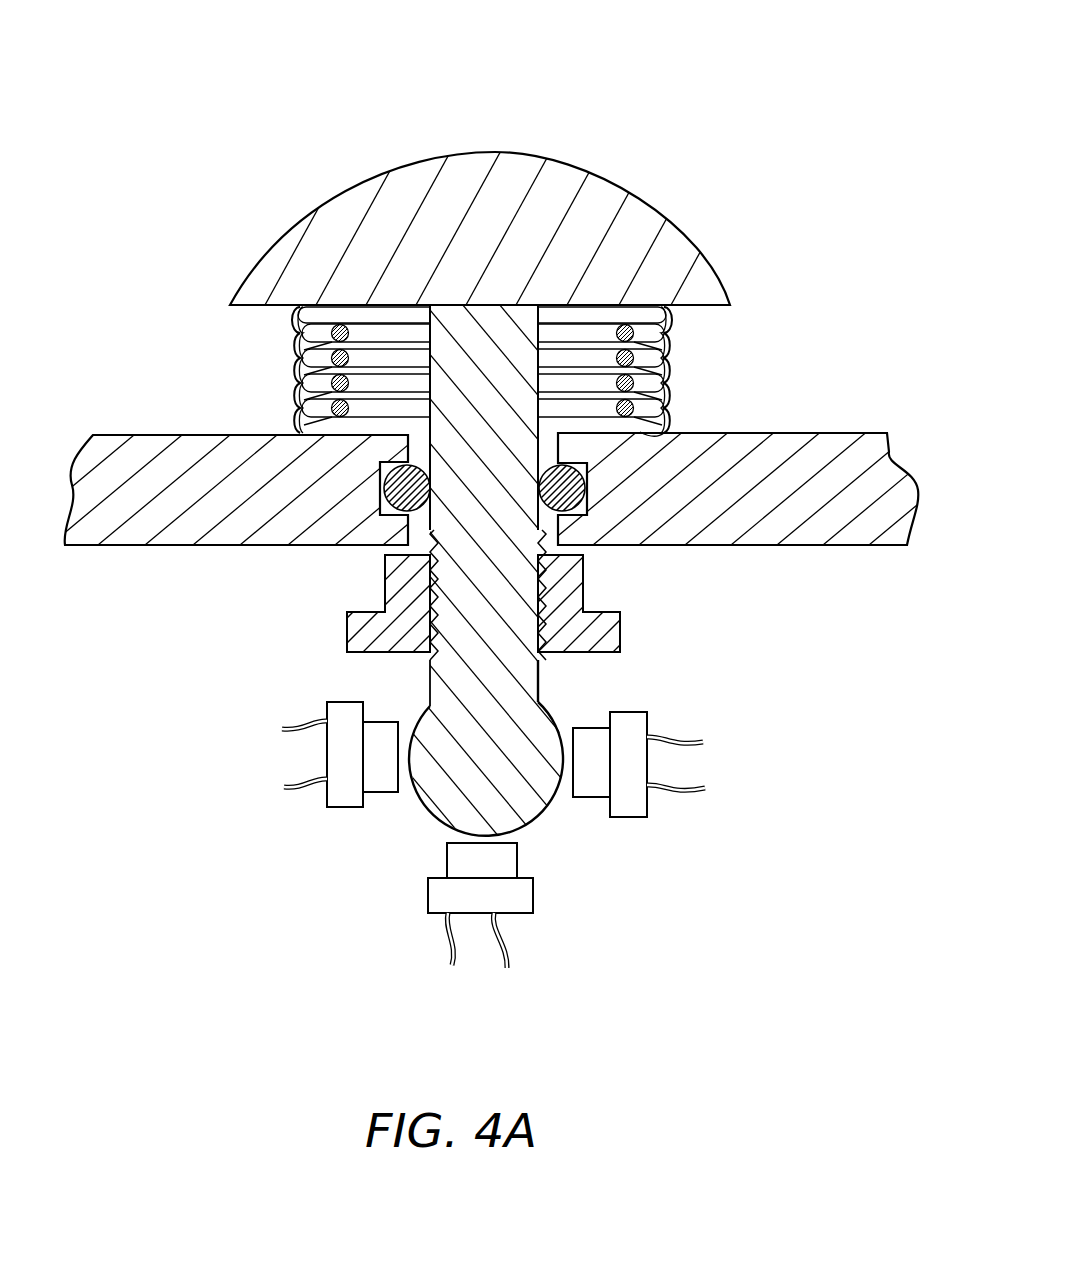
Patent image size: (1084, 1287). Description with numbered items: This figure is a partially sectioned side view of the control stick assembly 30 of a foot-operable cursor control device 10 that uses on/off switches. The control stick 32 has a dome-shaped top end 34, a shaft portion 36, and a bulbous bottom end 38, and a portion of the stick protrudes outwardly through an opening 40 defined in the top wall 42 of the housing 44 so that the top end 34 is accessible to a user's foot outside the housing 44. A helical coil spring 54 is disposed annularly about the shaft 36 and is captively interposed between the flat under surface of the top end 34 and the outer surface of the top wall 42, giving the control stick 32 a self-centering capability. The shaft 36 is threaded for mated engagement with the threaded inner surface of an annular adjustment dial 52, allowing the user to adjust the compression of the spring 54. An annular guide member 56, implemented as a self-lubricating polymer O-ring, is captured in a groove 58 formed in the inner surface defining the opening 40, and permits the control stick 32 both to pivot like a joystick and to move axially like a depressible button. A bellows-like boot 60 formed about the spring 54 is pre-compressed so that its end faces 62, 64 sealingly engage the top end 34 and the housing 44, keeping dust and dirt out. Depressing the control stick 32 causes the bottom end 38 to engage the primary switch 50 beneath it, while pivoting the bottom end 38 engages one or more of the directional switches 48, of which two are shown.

The foot-operable cursor control device 10 is at (756, 68).
The control stick assembly 30 is at (801, 208).
The control stick 32 is at (469, 131).
The top end 34 is at (607, 183).
The shaft portion 36 is at (548, 453).
The bottom end 38 is at (548, 707).
The opening 40 is at (410, 440).
The top wall 42 is at (770, 433).
The housing 44 is at (143, 435).
The directional switches 48 is at (342, 808).
The primary switch 50 is at (535, 908).
The annular adjustment dial 52 is at (387, 560).
The helical coil spring 54 is at (308, 344).
The annular guide member 56 is at (377, 512).
The groove 58 is at (592, 508).
The bellows-like boot 60 is at (300, 380).
The end face 62 is at (668, 318).
The end face 64 is at (672, 425).